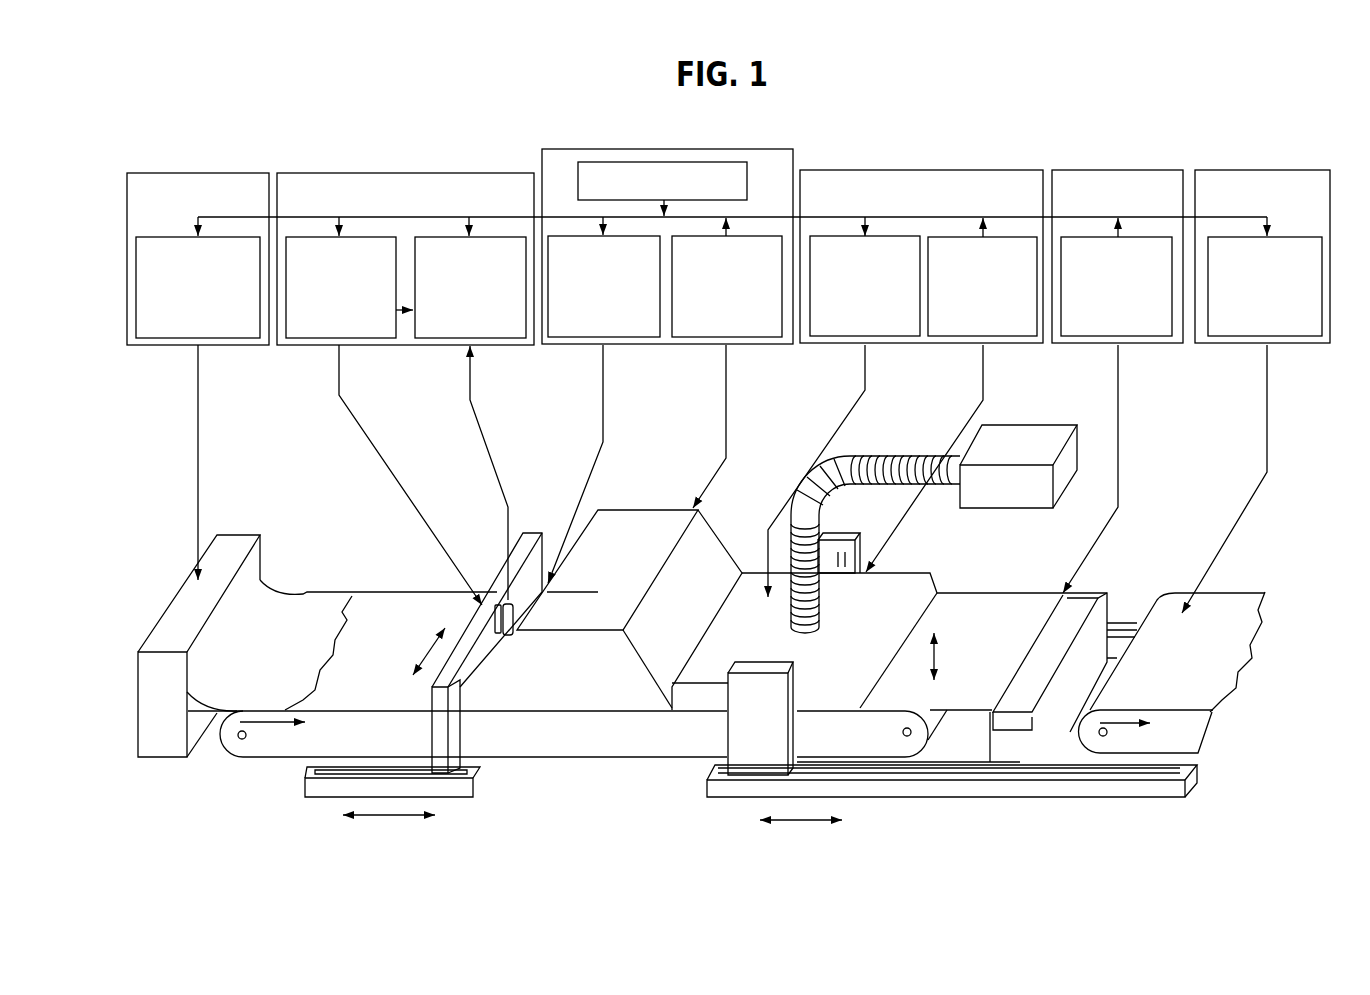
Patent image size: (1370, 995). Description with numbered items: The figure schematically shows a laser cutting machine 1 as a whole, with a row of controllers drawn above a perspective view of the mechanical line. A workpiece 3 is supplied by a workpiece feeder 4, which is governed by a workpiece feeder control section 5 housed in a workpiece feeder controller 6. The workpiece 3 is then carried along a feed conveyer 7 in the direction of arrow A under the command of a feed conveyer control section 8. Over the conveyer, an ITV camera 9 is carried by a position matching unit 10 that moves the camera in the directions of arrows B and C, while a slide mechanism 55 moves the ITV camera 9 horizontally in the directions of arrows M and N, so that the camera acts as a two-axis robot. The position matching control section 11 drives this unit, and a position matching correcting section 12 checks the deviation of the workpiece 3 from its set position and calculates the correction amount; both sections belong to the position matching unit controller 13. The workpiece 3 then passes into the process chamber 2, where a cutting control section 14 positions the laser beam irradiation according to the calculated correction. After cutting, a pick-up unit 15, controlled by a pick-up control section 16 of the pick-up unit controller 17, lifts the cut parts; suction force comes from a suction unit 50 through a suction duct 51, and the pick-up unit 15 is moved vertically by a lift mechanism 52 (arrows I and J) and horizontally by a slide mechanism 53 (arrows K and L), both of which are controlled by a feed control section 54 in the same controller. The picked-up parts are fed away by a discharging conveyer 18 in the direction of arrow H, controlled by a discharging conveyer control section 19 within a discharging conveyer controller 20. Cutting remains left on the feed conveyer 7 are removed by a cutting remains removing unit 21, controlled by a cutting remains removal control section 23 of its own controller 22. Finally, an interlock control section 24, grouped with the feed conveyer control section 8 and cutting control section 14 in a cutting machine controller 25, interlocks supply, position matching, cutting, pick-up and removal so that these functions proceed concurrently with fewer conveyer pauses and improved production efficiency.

The machine 1 is at (558, 773).
The process chamber 2 is at (648, 508).
The workpiece 3 is at (282, 590).
The workpiece feeder 4 is at (163, 758).
The workpiece feeder control section 5 is at (162, 340).
The workpiece feeder controller 6 is at (190, 173).
The feed conveyer 7 is at (267, 758).
The feed conveyer control section 8 is at (562, 340).
The ITV camera 9 is at (513, 637).
The position matching unit 10 is at (497, 597).
The position matching control section 11 is at (302, 342).
The position matching correcting section 12 is at (427, 340).
The position matching unit controller 13 is at (367, 173).
The cutting control section 14 is at (682, 340).
The pick-up unit 15 is at (695, 703).
The pick-up control section 16 is at (822, 340).
The pick-up unit controller 17 is at (930, 165).
The discharging conveyer 18 is at (1178, 593).
The discharging conveyer control section 19 is at (1213, 340).
The discharging conveyer controller 20 is at (1233, 168).
The cutting remains removing unit 21 is at (1093, 592).
The cutting remains removing control 22 is at (1068, 340).
The cutting remains removal control section 23 is at (1098, 166).
The interlock control section 24 is at (797, 162).
The cutting machine controller 25 is at (542, 162).
The suction unit 50 is at (1002, 510).
The suction duct 51 is at (877, 458).
The lift mechanism 52 is at (733, 765).
The slide mechanism 53 is at (1192, 777).
The feed control section 54 is at (952, 340).
The slide mechanism 55 is at (478, 782).